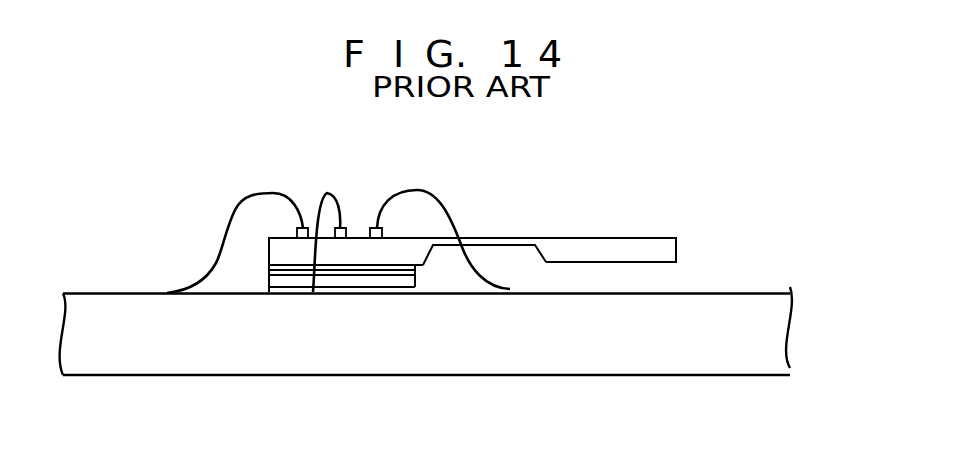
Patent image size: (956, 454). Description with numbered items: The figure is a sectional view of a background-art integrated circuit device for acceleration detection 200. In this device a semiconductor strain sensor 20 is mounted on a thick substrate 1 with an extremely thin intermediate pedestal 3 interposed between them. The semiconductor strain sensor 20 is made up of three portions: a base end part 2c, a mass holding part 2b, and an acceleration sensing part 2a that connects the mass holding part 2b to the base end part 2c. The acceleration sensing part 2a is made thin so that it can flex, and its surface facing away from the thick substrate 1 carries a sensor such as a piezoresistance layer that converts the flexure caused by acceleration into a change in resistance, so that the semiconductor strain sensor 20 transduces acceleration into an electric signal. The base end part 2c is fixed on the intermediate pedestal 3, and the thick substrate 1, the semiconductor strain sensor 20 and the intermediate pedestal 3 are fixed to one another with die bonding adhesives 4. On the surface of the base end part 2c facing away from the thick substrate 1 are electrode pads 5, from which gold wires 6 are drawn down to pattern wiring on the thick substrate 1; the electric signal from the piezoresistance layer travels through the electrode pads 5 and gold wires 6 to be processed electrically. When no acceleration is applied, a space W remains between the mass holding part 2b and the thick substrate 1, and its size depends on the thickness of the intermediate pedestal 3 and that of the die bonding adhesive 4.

The thick substrate 1 is at (773, 323).
The integrated circuit device for acceleration detection 200 is at (492, 128).
The acceleration sensing part 2a is at (505, 242).
The mass holding part 2b is at (608, 245).
The base end part 2c is at (357, 248).
The semiconductor strain sensor 20 is at (586, 219).
The intermediate pedestal 3 is at (357, 278).
The die bonding adhesive 4 is at (270, 290).
The electrode pad 5 is at (303, 227).
The gold wire 6 is at (252, 197).
The space W is at (668, 263).